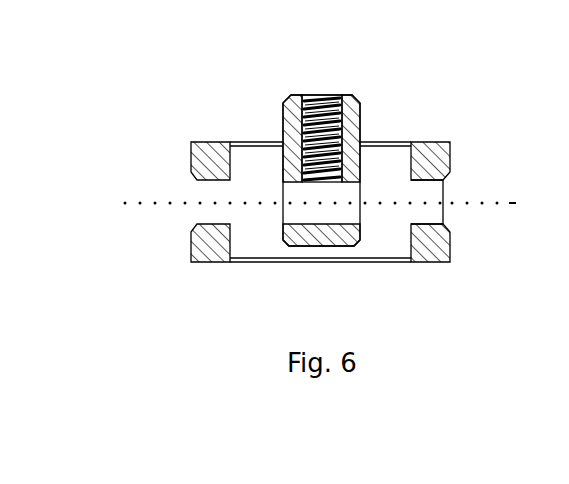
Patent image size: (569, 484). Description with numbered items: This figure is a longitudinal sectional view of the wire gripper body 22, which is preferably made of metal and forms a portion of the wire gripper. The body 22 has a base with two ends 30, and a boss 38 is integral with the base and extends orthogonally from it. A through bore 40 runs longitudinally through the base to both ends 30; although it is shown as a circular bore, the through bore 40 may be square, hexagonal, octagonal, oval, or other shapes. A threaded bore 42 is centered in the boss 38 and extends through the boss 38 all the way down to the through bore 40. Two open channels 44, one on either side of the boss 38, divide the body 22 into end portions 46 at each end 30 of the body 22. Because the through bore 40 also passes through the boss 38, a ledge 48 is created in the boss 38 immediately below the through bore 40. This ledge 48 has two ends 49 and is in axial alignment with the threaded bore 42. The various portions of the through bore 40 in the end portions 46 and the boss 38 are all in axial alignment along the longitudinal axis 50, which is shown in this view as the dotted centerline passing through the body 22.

The wire gripper body 22 is at (130, 106).
The ends 30 is at (191, 154).
The boss 38 is at (360, 125).
The through bore 40 is at (428, 205).
The threaded bore 42 is at (322, 105).
The open channels 44 is at (254, 160).
The end portions 46 is at (205, 256).
The ledge 48 is at (318, 240).
The ends 49 is at (281, 237).
The longitudinal axis 50 is at (155, 203).